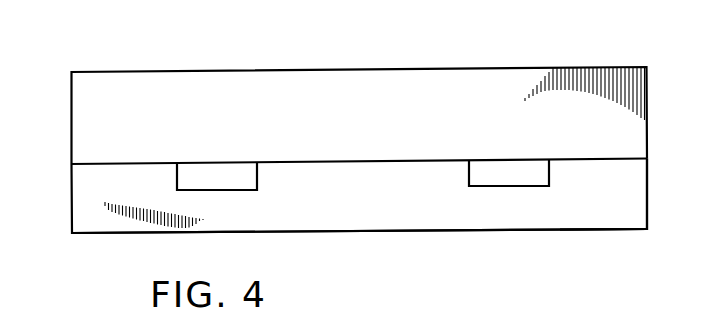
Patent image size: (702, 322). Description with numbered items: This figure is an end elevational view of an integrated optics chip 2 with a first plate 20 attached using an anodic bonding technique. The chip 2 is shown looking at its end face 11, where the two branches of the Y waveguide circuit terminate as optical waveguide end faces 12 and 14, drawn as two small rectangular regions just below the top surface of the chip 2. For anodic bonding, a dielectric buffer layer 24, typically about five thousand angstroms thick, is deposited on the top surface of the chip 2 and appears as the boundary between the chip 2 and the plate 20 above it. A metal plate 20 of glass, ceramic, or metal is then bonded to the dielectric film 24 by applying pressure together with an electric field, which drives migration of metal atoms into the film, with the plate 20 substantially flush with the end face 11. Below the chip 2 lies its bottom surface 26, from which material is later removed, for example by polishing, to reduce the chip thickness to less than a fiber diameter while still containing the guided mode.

The plate 20 is at (130, 92).
The dielectric buffer layer 24 is at (110, 163).
The integrated optics chip 2 is at (87, 205).
The optical waveguide end face 12 is at (208, 173).
The optical waveguide end face 14 is at (513, 170).
The bottom surface 26 is at (413, 231).
The end face 11 is at (602, 220).